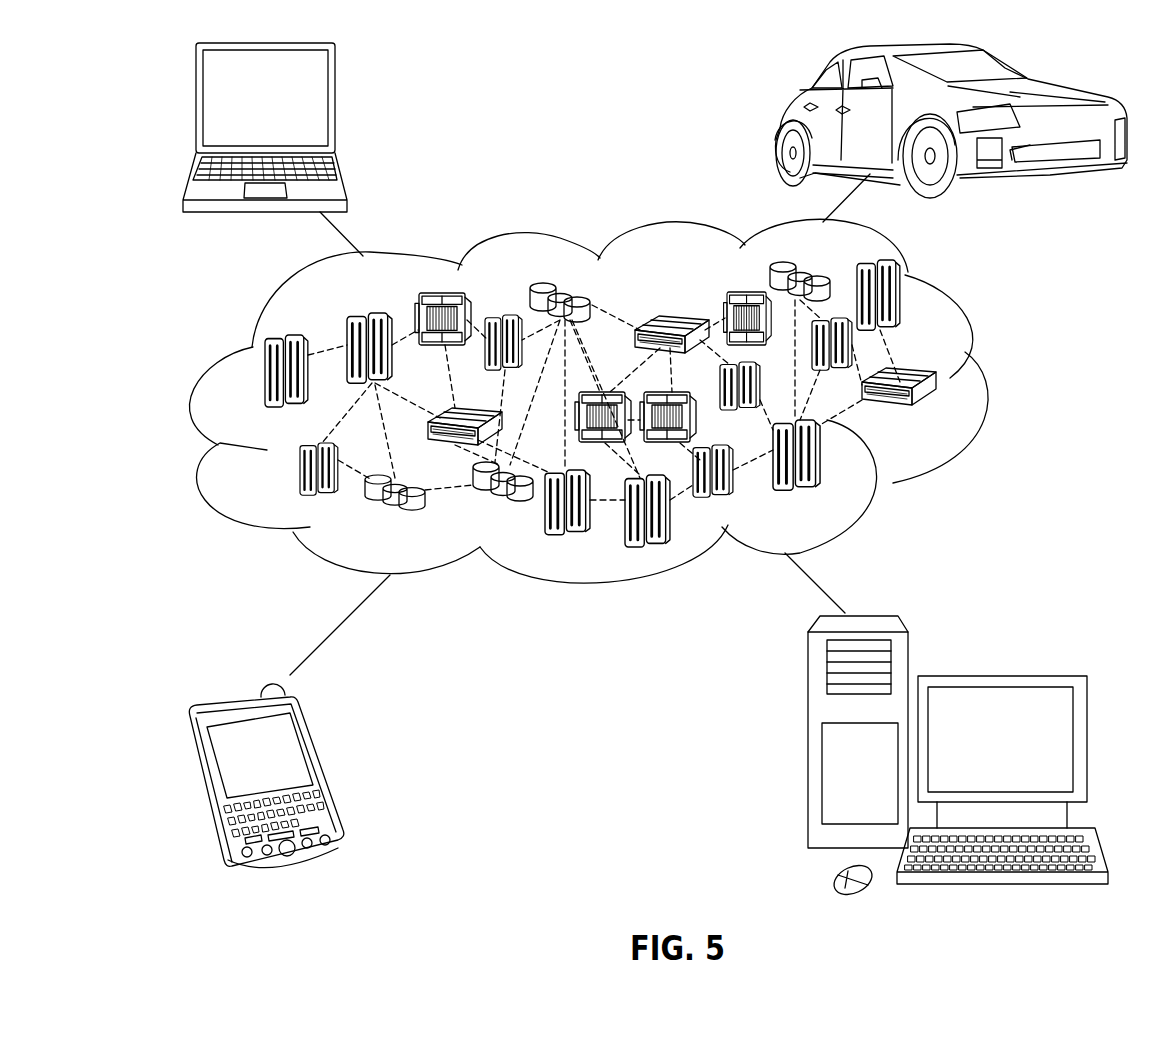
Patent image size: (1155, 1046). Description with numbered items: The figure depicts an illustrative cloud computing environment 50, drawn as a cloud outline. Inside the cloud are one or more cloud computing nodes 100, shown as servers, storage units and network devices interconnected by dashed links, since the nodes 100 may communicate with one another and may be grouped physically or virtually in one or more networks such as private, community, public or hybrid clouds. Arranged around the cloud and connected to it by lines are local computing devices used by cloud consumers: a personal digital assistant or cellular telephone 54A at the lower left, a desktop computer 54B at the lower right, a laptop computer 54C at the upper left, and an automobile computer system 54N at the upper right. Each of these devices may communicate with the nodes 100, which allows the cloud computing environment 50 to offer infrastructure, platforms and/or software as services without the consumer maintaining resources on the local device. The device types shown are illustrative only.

The cloud computing environment 50 is at (1000, 380).
The cloud computing nodes 100 is at (942, 411).
The personal digital assistant or cellular telephone 54A is at (322, 770).
The desktop computer 54B is at (998, 675).
The laptop computer 54C is at (336, 106).
The automobile computer system 54N is at (773, 125).